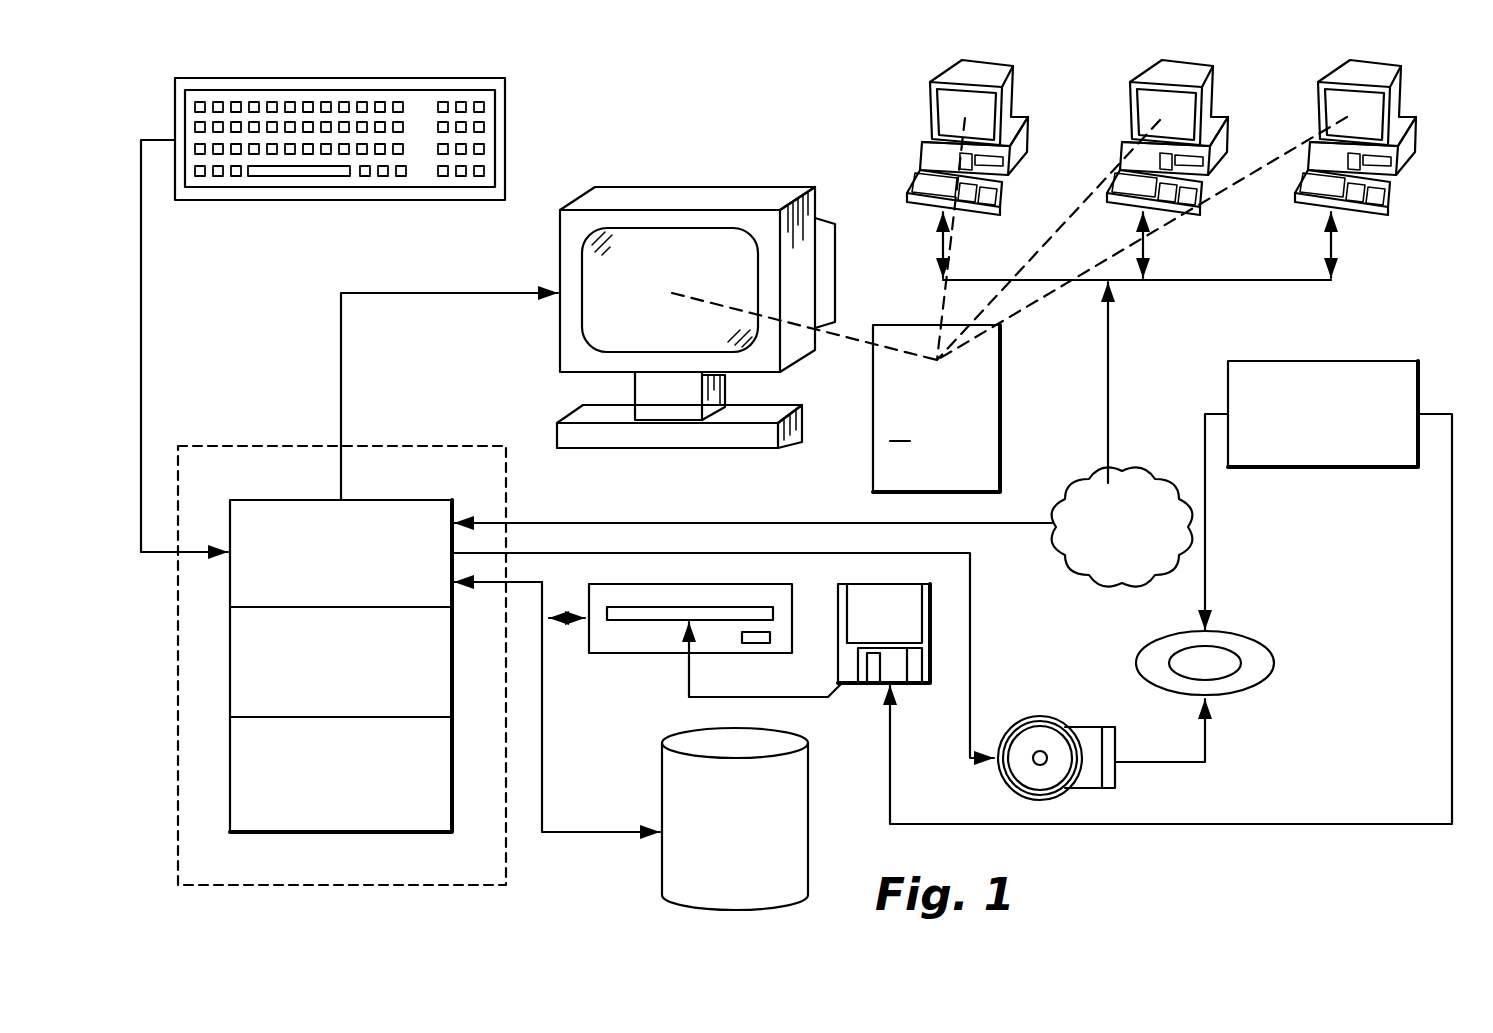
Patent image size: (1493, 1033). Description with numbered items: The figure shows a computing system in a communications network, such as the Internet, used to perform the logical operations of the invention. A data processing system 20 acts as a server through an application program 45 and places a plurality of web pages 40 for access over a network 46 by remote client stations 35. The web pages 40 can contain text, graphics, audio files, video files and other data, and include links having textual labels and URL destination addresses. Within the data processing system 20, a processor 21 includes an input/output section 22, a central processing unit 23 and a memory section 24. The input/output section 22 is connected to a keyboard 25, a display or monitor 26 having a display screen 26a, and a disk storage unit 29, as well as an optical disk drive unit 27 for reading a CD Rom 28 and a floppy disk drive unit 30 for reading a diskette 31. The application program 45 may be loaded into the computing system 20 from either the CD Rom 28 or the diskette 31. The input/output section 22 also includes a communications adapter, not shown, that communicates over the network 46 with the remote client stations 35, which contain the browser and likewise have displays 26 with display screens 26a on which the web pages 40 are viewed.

The data processing system 20 is at (637, 767).
The processor 21 is at (315, 445).
The input/output section 22 is at (298, 500).
The central processing unit 23 is at (452, 680).
The memory section 24 is at (452, 793).
The keyboard 25 is at (507, 122).
The display or monitor 26 is at (588, 318).
The display screen 26a is at (607, 313).
The optical disk drive unit 27 is at (1080, 730).
The CD Rom 28 is at (1240, 685).
The disk storage unit 29 is at (677, 858).
The floppy disk drive unit 30 is at (660, 640).
The diskette 31 is at (920, 685).
The remote client stations 35 is at (1000, 113).
The web pages 40 is at (1000, 442).
The application program 45 is at (1350, 365).
The network 46 is at (1123, 490).